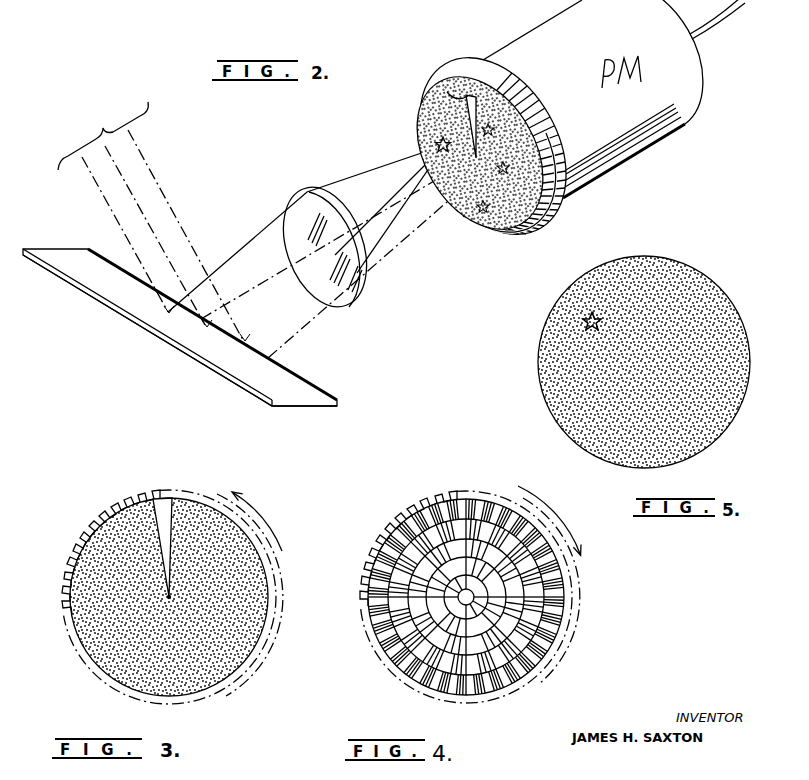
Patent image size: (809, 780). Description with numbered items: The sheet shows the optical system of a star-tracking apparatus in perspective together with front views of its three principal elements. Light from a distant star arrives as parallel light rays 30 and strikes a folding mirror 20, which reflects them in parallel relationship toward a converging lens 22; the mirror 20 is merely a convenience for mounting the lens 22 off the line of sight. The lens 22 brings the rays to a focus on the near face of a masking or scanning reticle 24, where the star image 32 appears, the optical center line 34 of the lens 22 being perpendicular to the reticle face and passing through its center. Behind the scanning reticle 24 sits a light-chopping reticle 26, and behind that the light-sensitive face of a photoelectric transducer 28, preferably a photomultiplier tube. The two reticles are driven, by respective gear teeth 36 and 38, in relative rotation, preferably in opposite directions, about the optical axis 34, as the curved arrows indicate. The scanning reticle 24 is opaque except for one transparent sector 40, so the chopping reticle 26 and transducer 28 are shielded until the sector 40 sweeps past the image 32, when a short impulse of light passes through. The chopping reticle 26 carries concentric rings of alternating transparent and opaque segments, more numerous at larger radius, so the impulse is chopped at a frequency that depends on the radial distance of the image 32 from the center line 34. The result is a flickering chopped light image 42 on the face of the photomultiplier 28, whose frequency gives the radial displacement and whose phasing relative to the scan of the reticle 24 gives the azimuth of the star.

In FIG. 2, the folding mirror 20 is at (141, 323).
In FIG. 2, the converging lens 22 is at (365, 287).
In FIG. 2, the masking or scanning reticle 24 is at (498, 226).
In FIG. 3, the masking or scanning reticle 24 is at (261, 640).
In FIG. 2, the light-chopping reticle 26 is at (538, 216).
In FIG. 4, the light-chopping reticle 26 is at (555, 638).
In FIG. 2, the photoelectric transducer 28 is at (648, 148).
In FIG. 5, the photoelectric transducer 28 is at (708, 299).
In FIG. 2, the parallel light rays 30 is at (150, 221).
In FIG. 2, the image of the star 32 is at (436, 142).
In FIG. 2, the optical center line 34 is at (267, 281).
In FIG. 3, the gear teeth 36 is at (80, 532).
In FIG. 4, the gear teeth 38 is at (399, 505).
In FIG. 2, the transparent sector 40 is at (450, 93).
In FIG. 3, the transparent sector 40 is at (163, 500).
In FIG. 5, the chopped light image 42 is at (584, 323).